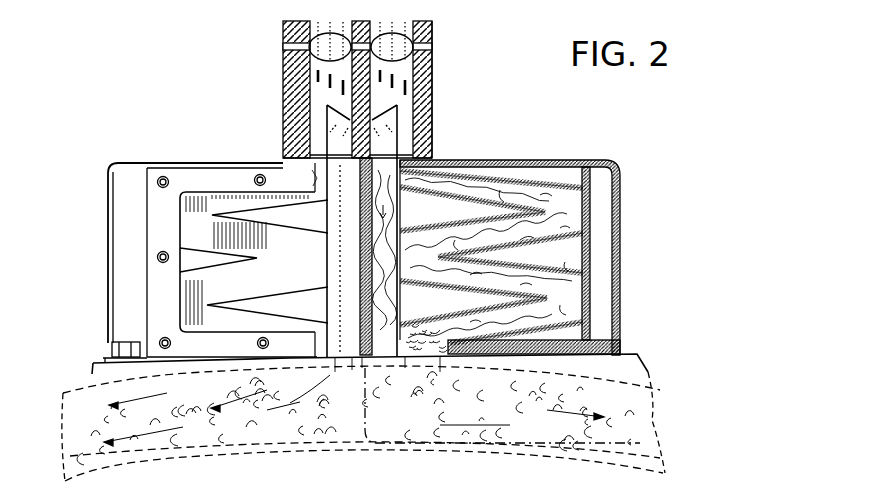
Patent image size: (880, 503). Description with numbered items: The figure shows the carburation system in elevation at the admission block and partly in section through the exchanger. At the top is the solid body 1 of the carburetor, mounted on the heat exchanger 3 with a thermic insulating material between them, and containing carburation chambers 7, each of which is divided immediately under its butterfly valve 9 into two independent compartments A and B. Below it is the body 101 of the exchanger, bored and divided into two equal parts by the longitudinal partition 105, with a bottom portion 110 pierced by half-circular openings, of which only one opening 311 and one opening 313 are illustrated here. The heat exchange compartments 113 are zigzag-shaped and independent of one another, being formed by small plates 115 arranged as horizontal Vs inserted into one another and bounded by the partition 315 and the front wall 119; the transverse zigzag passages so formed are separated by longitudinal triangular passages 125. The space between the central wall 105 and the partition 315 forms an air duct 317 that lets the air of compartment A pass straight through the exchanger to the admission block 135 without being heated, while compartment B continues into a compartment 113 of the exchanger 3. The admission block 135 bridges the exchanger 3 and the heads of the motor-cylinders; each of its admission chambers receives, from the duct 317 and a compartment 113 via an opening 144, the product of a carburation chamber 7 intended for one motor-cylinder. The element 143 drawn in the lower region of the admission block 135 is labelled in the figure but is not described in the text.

The solid body 1 is at (490, 90).
The heat exchanger 3 is at (627, 287).
The carburation chamber 7 is at (408, 88).
The butterfly valve 9 is at (405, 42).
The body 101 is at (132, 218).
The longitudinal partition 105 is at (360, 238).
The bottom portion 110 is at (623, 345).
The heat exchange compartment 113 is at (588, 210).
The small plates 115 is at (525, 163).
The front wall 119 is at (617, 170).
The longitudinal triangular passage 125 is at (282, 217).
The admission block 135 is at (650, 370).
The ground layer 143 is at (637, 432).
The opening 144 is at (345, 360).
The half-circular opening 311 is at (430, 345).
The half-circular opening 313 is at (375, 345).
The partition 315 is at (388, 263).
The air duct 317 is at (387, 183).